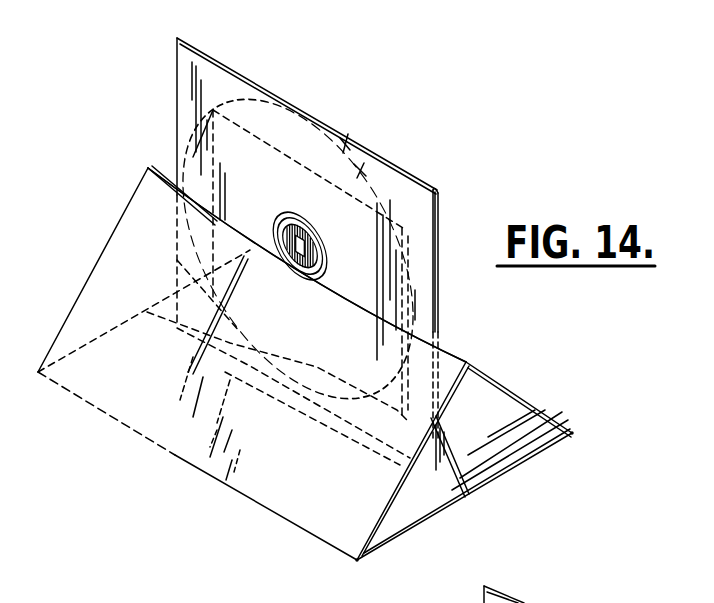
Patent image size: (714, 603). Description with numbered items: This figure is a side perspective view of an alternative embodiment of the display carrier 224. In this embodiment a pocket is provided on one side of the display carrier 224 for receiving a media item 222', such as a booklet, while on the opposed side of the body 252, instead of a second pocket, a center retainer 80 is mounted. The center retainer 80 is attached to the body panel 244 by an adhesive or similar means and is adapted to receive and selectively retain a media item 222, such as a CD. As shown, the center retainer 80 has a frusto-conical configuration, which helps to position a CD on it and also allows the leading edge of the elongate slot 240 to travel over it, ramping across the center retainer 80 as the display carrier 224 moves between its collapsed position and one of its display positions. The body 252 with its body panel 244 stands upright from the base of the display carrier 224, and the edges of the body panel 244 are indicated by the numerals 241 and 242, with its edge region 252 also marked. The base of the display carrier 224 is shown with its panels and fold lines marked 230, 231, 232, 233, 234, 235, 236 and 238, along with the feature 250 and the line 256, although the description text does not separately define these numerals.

The center retainer 80 is at (293, 214).
The media item 222 is at (379, 119).
The media item 222' is at (413, 148).
The display carrier 224 is at (103, 441).
The front panel side edge 230 is at (403, 517).
The front bottom corner 231 is at (358, 562).
The left end edge 232 is at (133, 223).
The top edge slot 233 is at (175, 190).
The end panel top edge 234 is at (512, 393).
The end panel corner 235 is at (578, 432).
The end panel hatch lines 236 is at (517, 447).
The end panel 238 is at (450, 437).
The elongate slot 240 is at (362, 313).
The card top edge 241 is at (283, 100).
The card side edge 242 is at (442, 215).
The body panel 244 is at (220, 73).
The slot flap 250 is at (476, 520).
The body 252 is at (169, 58).
The fold line 256 is at (177, 262).